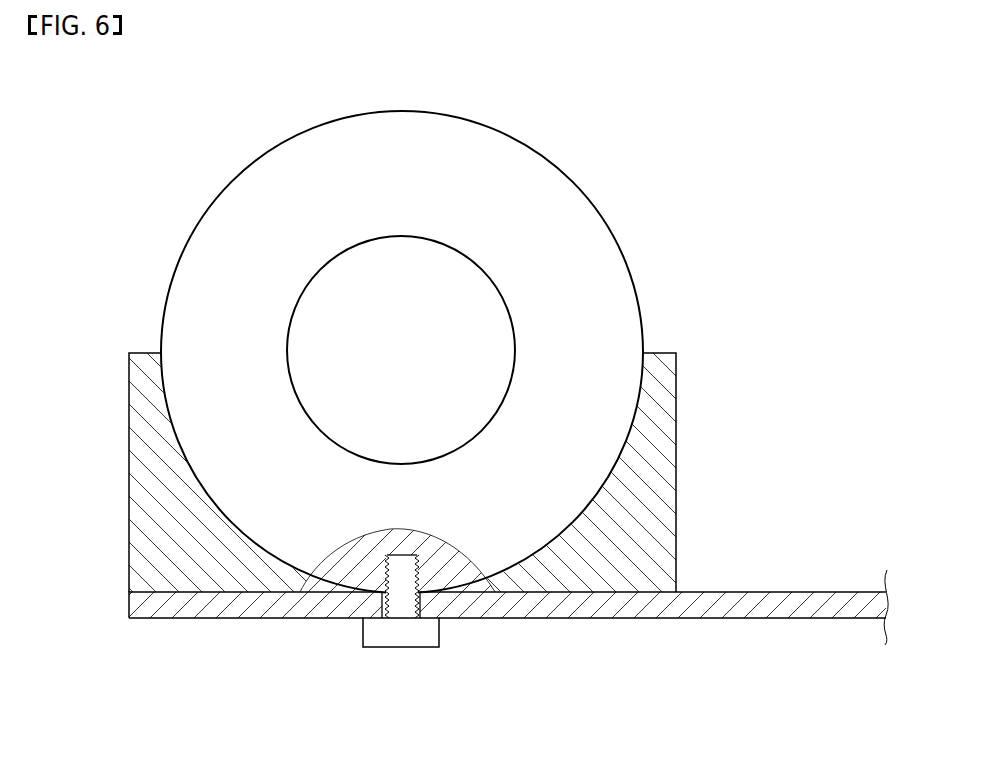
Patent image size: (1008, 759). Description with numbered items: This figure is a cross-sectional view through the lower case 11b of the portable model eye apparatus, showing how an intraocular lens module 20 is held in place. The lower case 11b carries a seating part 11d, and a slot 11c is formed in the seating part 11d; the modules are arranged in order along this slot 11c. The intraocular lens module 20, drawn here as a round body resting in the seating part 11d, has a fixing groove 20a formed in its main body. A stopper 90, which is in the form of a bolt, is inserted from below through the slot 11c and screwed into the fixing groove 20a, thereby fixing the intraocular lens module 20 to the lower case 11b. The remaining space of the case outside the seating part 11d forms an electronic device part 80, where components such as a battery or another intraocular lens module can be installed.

The lower case 11b is at (700, 605).
The slot 11c is at (397, 610).
The seating part 11d is at (236, 527).
The intraocular lens module 20 is at (585, 232).
The fixing groove 20a is at (417, 572).
The electronic device part 80 is at (785, 592).
The stopper 90 is at (402, 633).